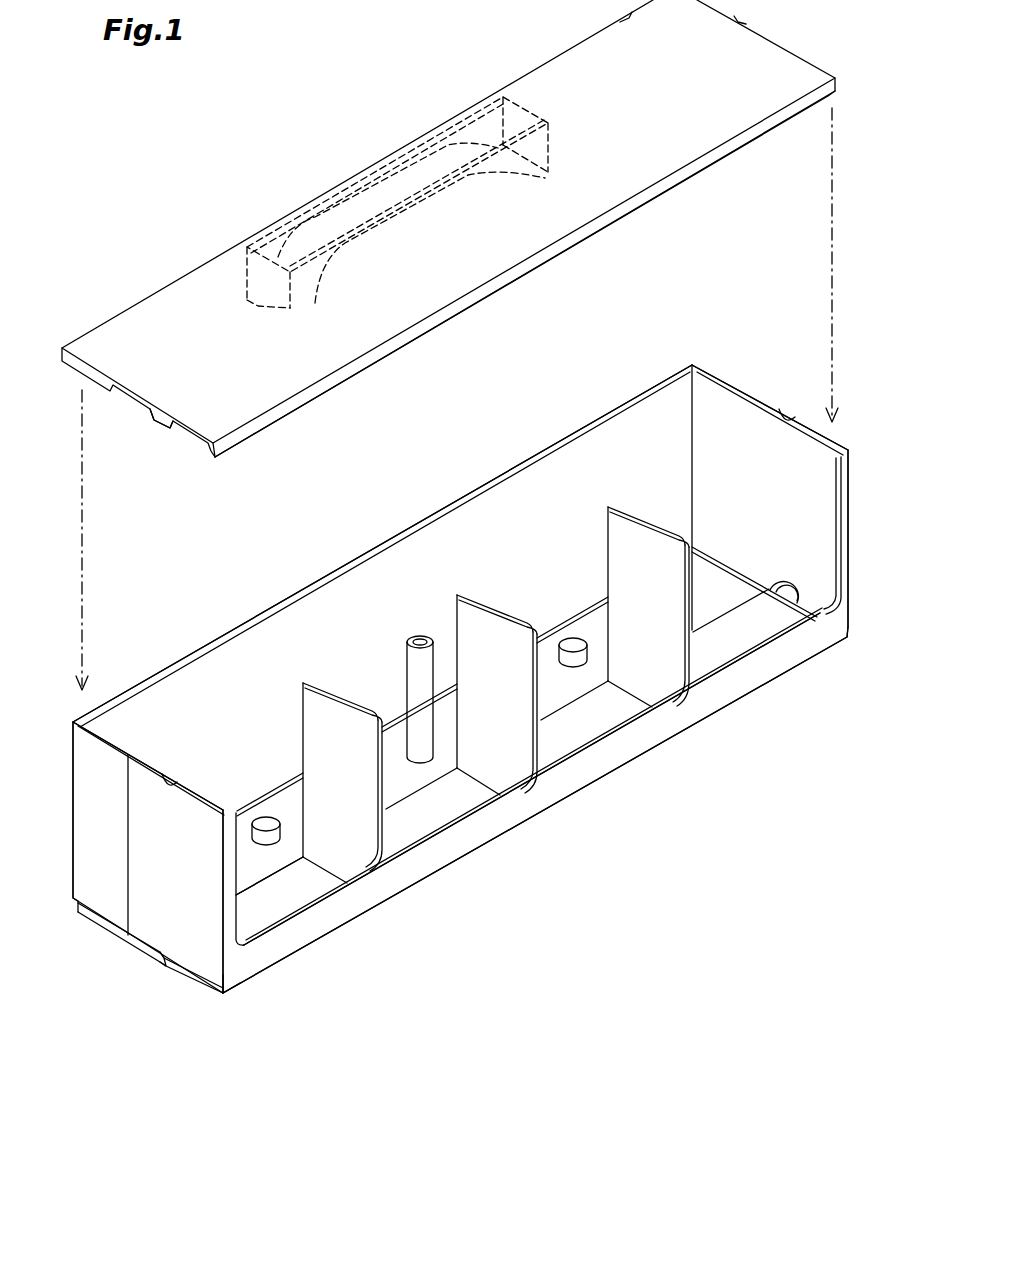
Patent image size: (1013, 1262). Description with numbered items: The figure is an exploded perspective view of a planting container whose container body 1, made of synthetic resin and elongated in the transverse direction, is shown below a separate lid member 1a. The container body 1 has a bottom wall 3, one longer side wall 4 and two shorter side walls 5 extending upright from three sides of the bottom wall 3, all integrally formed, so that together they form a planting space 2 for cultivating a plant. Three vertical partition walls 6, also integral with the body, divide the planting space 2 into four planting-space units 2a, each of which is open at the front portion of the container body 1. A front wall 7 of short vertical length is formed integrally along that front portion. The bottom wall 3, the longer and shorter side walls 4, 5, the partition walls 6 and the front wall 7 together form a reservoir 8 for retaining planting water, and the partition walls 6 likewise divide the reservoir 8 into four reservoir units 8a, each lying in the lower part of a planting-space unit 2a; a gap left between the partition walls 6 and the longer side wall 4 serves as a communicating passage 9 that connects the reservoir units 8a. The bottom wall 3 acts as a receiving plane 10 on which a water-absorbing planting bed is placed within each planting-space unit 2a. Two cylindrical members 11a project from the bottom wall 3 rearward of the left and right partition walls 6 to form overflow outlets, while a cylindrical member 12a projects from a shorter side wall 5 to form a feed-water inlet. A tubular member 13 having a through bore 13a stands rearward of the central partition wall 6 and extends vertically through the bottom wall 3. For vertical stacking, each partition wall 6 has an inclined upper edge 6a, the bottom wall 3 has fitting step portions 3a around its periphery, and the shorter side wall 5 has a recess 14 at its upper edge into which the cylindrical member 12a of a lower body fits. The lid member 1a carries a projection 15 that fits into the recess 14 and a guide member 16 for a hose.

The container body 1 is at (456, 718).
The lid member 1a is at (448, 263).
The planting space 2 is at (549, 800).
The planting-space unit 2a is at (279, 896).
The bottom wall 3 is at (552, 856).
The fitting step portion 3a is at (848, 636).
The longer side wall 4 is at (360, 590).
The shorter side wall 5 is at (97, 816).
The partition wall 6 is at (472, 655).
The inclined upper edge 6a is at (333, 693).
The front wall 7 is at (541, 794).
The reservoir 8 is at (501, 644).
The reservoir unit 8a is at (250, 822).
The communicating passage 9 is at (290, 724).
The receiving plane 10 is at (396, 840).
The cylindrical member 11a is at (263, 818).
The cylindrical member 12a is at (779, 577).
The tubular member 13 is at (442, 655).
The through bore 13a is at (420, 636).
The recess 14 is at (173, 779).
The projection 15 is at (155, 428).
The guide member 16 is at (548, 146).